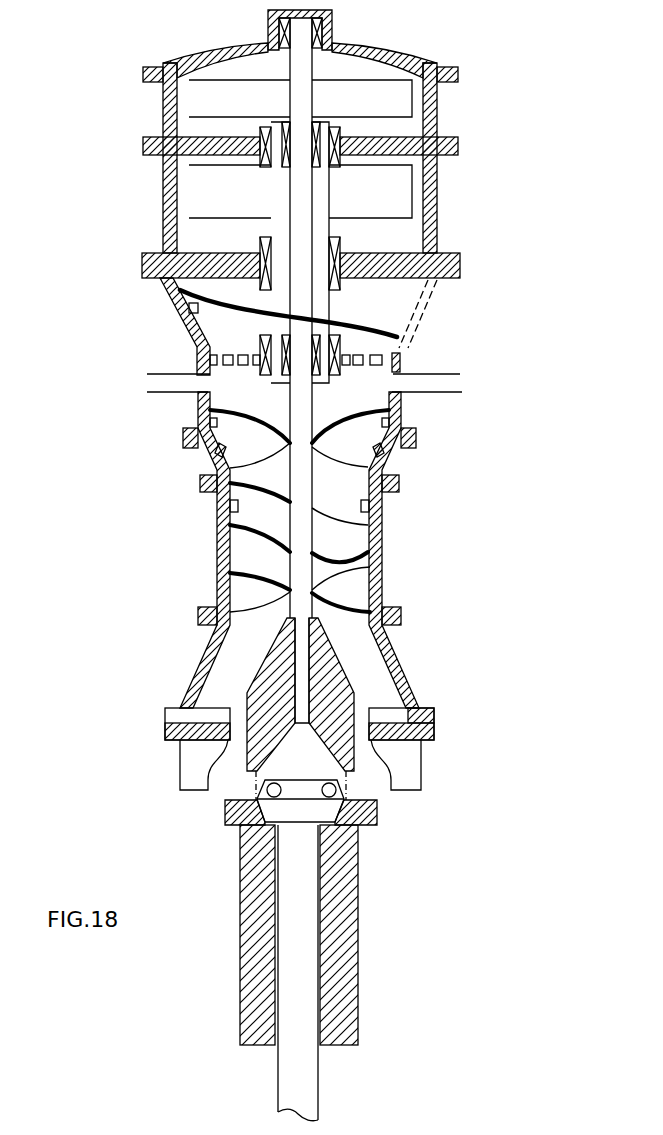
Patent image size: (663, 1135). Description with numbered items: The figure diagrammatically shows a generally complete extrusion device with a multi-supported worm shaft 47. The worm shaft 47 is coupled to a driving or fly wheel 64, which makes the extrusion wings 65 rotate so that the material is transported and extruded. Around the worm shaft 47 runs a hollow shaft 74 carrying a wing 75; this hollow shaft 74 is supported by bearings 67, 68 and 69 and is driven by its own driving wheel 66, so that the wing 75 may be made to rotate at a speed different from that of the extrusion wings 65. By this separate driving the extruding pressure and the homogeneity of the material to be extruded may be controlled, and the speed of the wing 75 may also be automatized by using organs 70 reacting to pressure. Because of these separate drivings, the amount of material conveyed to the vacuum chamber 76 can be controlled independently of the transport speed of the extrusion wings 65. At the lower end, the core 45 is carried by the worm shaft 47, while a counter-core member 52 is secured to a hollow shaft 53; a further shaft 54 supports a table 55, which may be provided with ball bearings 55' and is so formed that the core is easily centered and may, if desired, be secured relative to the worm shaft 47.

The core 45 is at (277, 687).
The worm shaft 47 is at (298, 573).
The counter-core member 52 is at (225, 815).
The hollow shaft 53 is at (348, 918).
The shaft 54 is at (305, 987).
The table 55 is at (376, 795).
The ball bearings 55' is at (301, 770).
The driving or fly wheel 64 is at (222, 98).
The extrusion wings 65 is at (340, 562).
The driving wheel 66 is at (393, 202).
The bearing 67 is at (340, 350).
The bearing 68 is at (332, 285).
The bearing 69 is at (337, 138).
The organs reacting to pressure 70 is at (225, 507).
The hollow shaft 74 is at (270, 232).
The wing 75 is at (233, 307).
The vacuum chamber 76 is at (250, 393).